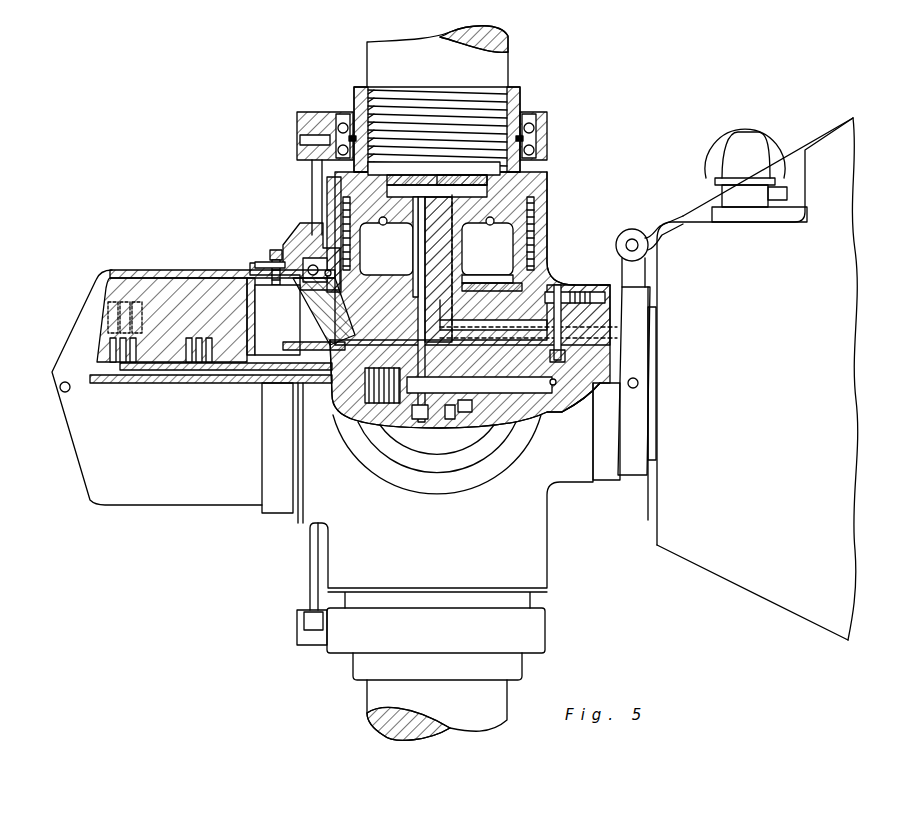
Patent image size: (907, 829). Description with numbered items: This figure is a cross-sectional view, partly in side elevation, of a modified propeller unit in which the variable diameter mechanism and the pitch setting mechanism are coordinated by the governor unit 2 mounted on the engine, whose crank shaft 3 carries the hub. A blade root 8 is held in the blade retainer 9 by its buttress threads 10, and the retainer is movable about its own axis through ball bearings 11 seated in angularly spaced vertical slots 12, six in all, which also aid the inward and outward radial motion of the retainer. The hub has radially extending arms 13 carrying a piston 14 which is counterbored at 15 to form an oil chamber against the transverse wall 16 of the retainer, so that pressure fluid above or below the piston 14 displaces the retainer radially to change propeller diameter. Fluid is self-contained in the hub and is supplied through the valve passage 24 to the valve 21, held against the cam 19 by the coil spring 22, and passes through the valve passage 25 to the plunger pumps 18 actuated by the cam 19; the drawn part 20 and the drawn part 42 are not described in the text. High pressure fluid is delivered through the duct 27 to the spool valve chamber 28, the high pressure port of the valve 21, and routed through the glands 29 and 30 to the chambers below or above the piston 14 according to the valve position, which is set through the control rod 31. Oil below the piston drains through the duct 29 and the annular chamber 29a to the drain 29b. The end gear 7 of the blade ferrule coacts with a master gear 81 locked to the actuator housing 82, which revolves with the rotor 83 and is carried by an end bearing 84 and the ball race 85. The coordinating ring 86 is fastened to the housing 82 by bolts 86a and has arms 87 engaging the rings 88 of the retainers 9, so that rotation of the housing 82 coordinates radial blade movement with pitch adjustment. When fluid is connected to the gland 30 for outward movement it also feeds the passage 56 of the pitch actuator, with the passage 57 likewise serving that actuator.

The governor unit 2 is at (750, 132).
The crank shaft 3 is at (602, 290).
The end gear 7 is at (388, 297).
The blade root 8 is at (510, 53).
The blade retainer 9 is at (521, 93).
The buttress threads 10 is at (502, 88).
The ball bearings 11 is at (546, 220).
The vertical slots 12 is at (540, 250).
The radially extending arms 13 is at (462, 253).
The piston 14 is at (386, 246).
The counterbore 15 is at (403, 186).
The transverse wall 16 is at (447, 186).
The plunger pumps 18 is at (622, 290).
The cam 19 is at (614, 478).
The clamp screw 20 is at (565, 290).
The valve 21 is at (450, 382).
The coil spring 22 is at (352, 422).
The two-way check valve 24 is at (332, 399).
The valve 25 is at (558, 408).
The duct 27 is at (487, 271).
The spool valve chamber 28 is at (465, 416).
The duct 29 is at (418, 250).
The annular chamber 29a is at (422, 410).
The drain 29b is at (447, 418).
The duct 30 is at (458, 236).
The control rod 31 is at (613, 325).
The link bar 42 is at (622, 478).
The passage 56 is at (155, 383).
The passage 57 is at (224, 372).
The master gear 81 is at (307, 315).
The actuator housing 82 is at (228, 270).
The rotor 83 is at (186, 278).
The end bearing 84 is at (317, 273).
The ball race 85 is at (312, 228).
The coordinating ring 86 is at (292, 248).
The bolts 86a is at (272, 256).
The arms 87 is at (313, 183).
The rings 88 is at (312, 122).